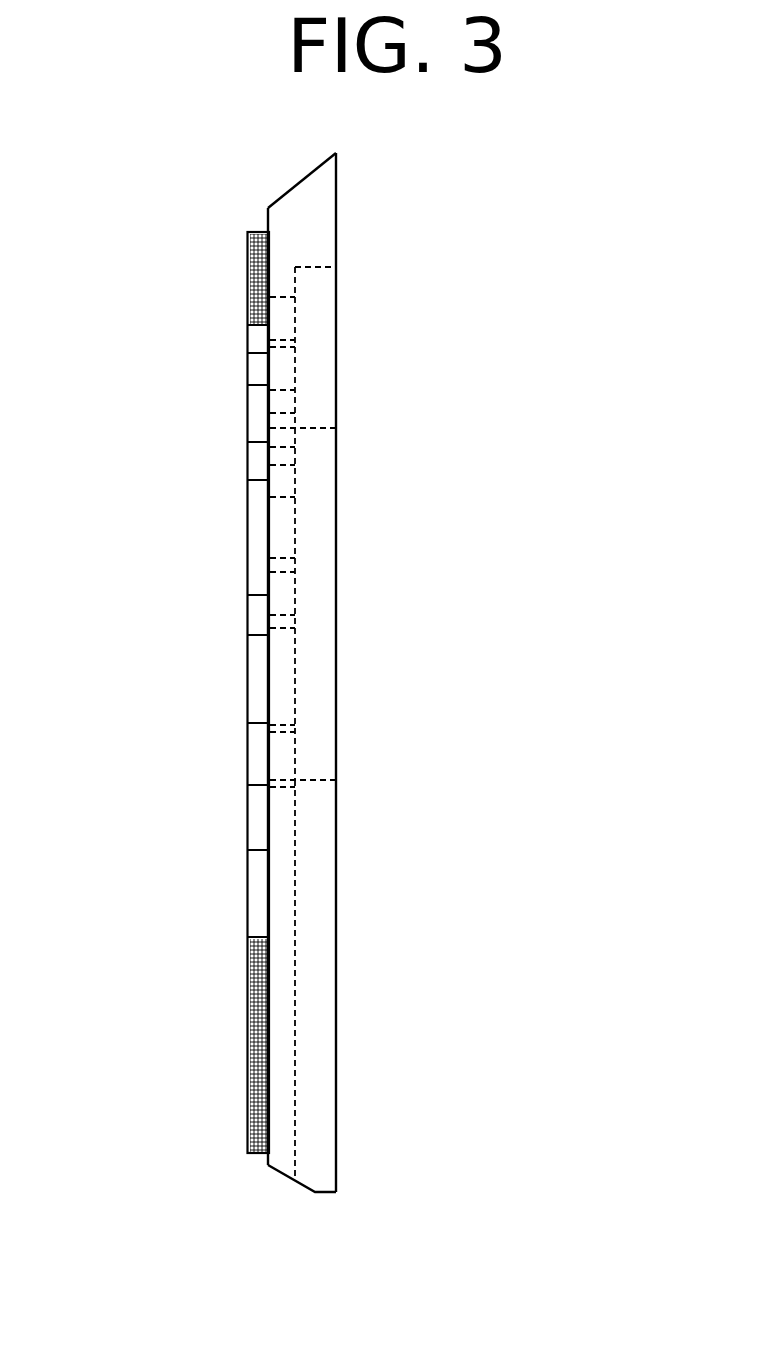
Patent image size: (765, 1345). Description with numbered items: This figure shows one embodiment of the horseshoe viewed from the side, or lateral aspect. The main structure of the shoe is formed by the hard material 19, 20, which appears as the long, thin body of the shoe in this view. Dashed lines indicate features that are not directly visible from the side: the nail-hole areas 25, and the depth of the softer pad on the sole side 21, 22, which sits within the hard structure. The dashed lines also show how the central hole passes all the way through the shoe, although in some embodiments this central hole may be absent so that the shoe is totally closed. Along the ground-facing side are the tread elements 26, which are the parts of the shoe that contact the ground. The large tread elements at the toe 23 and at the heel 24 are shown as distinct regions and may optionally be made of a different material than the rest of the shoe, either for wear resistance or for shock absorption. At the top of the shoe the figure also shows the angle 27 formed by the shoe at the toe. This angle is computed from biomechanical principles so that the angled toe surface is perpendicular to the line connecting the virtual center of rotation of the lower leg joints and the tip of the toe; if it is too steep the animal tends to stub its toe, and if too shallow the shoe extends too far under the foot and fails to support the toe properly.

The hard material 19 is at (320, 223).
The hard material 20 is at (278, 1012).
The softer pad on the sole side 21 is at (302, 280).
The softer pad on the sole side 22 is at (320, 1110).
The large tread element at the toe 23 is at (257, 272).
The large tread element at the heel 24 is at (260, 1073).
The nail-hole areas 25 is at (278, 597).
The tread elements 26 is at (258, 675).
The angle at the toe 27 is at (288, 178).